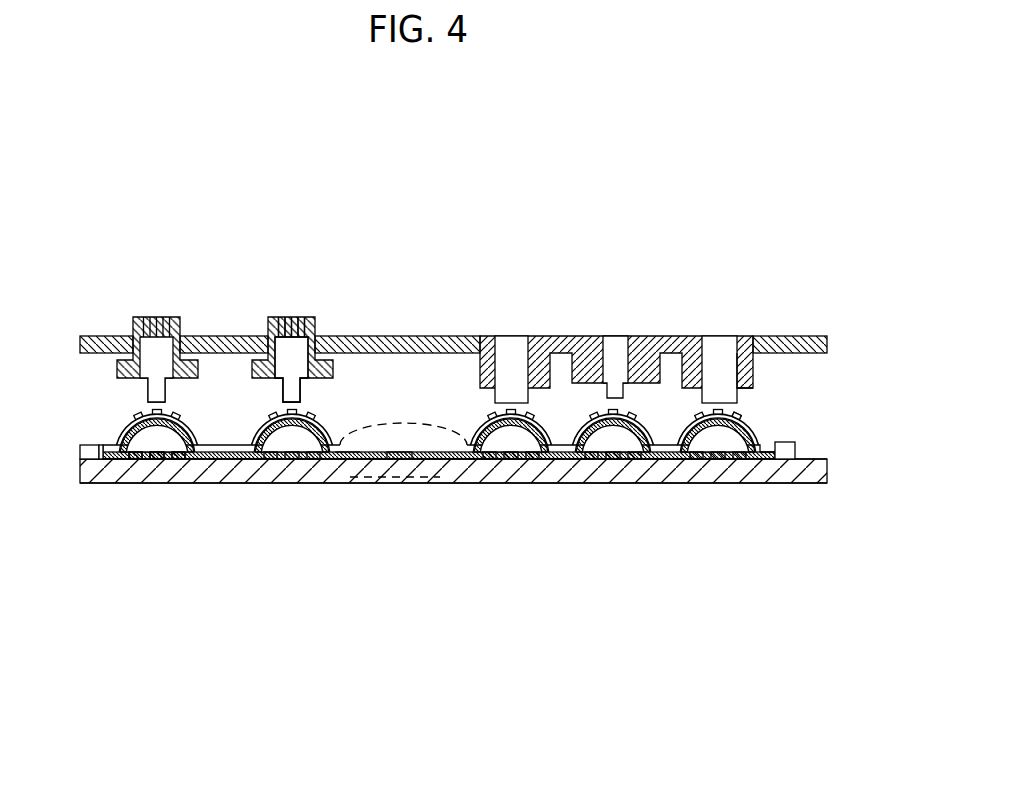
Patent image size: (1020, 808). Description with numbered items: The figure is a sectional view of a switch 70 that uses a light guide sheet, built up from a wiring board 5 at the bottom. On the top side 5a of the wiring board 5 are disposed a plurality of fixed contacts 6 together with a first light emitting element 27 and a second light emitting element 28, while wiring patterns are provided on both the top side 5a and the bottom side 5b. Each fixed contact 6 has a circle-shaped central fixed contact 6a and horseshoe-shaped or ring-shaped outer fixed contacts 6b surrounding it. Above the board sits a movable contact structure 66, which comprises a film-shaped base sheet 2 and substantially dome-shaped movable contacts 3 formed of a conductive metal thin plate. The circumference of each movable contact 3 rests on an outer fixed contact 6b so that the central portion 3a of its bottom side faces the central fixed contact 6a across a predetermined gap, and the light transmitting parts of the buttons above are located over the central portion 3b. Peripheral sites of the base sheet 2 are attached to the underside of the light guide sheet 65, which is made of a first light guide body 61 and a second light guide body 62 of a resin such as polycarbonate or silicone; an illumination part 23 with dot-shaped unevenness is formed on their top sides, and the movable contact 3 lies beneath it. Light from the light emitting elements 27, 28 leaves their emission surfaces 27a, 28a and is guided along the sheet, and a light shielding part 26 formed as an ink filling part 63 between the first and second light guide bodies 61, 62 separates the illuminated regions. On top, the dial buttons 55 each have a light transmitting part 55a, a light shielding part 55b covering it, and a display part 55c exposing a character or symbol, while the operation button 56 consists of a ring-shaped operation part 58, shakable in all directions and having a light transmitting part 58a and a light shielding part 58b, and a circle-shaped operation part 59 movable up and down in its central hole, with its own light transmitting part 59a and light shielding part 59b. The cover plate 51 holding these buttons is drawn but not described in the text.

The switch 70 is at (55, 655).
The wiring board 5 is at (797, 470).
The top side 5a is at (808, 457).
The bottom side 5b is at (822, 482).
The base sheet 2 is at (242, 458).
The second light emitting element 28 is at (95, 455).
The emission surface 28a is at (102, 455).
The first light emitting element 27 is at (792, 452).
The emission surface 27a is at (768, 458).
The movable contact structure 66 is at (281, 531).
The movable contact 3 is at (160, 430).
The central portion 3a is at (157, 490).
The central portion 3b is at (727, 415).
The light guide sheet 65 is at (439, 438).
The light shielding part 26 is at (418, 421).
The second light guide body 62 is at (345, 452).
The ink filling part 63 is at (400, 454).
The first light guide body 61 is at (437, 455).
The illumination part 23 is at (511, 478).
The fixed contact 6 is at (666, 501).
The central fixed contact 6a is at (613, 457).
The outer fixed contact 6b is at (715, 478).
The nozzle plate 51 is at (412, 337).
The dial button 55 is at (237, 295).
The light transmitting part 55a is at (314, 324).
The light shielding part 55b is at (268, 325).
The display part 55c is at (287, 322).
The operation button 56 is at (629, 267).
The circle-shaped operation part 59 is at (573, 294).
The light transmitting part 59a is at (627, 320).
The light shielding part 59b is at (597, 358).
The ring-shaped operation part 58 is at (723, 294).
The light transmitting part 58a is at (720, 345).
The light shielding part 58b is at (753, 315).